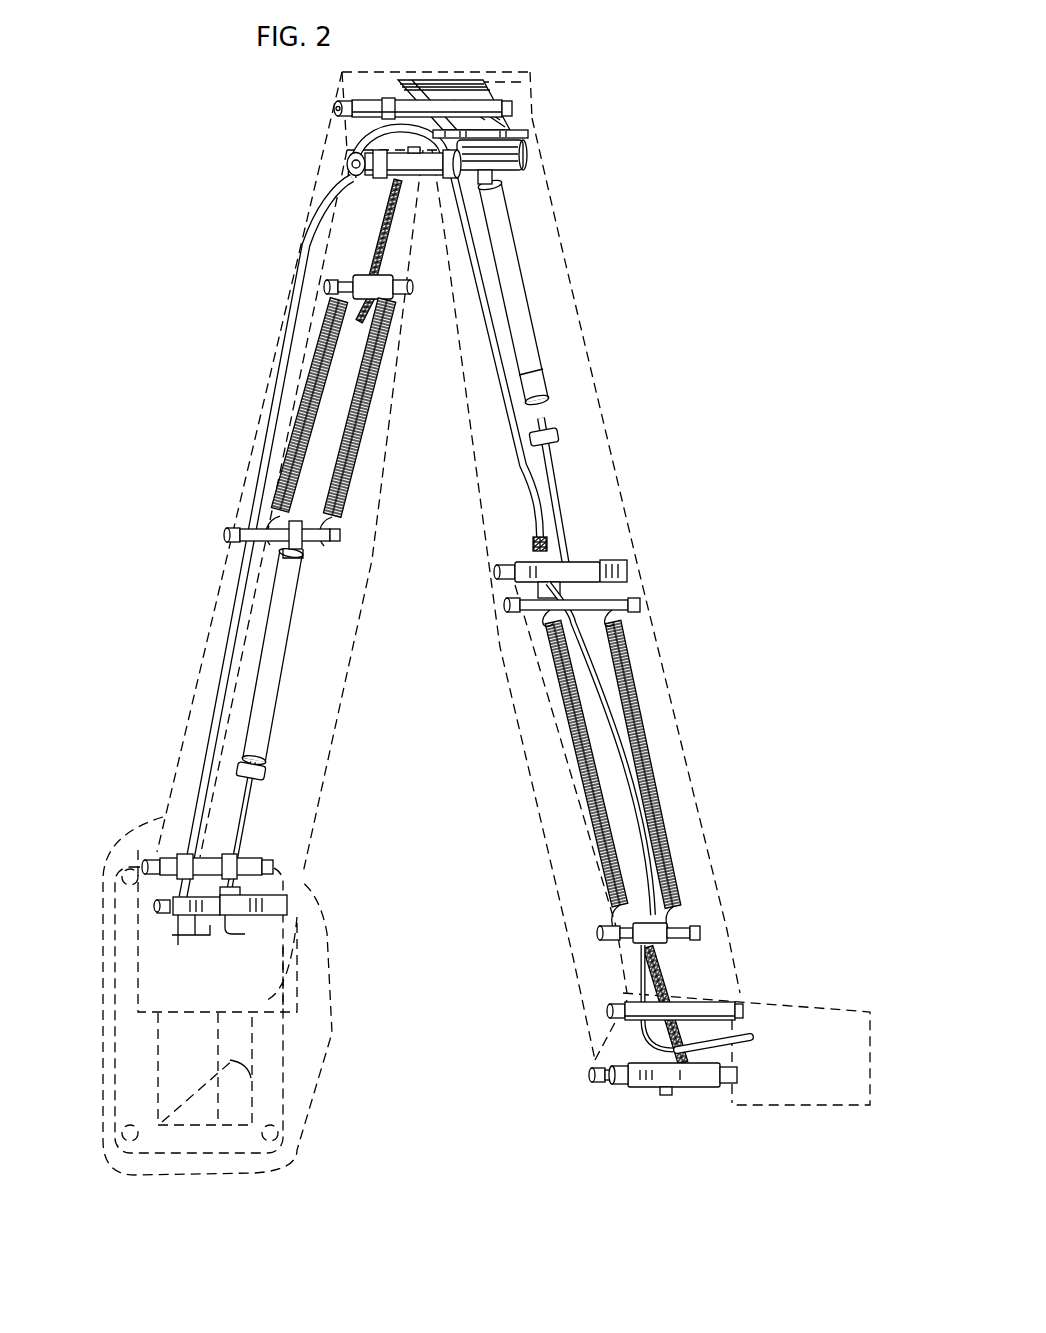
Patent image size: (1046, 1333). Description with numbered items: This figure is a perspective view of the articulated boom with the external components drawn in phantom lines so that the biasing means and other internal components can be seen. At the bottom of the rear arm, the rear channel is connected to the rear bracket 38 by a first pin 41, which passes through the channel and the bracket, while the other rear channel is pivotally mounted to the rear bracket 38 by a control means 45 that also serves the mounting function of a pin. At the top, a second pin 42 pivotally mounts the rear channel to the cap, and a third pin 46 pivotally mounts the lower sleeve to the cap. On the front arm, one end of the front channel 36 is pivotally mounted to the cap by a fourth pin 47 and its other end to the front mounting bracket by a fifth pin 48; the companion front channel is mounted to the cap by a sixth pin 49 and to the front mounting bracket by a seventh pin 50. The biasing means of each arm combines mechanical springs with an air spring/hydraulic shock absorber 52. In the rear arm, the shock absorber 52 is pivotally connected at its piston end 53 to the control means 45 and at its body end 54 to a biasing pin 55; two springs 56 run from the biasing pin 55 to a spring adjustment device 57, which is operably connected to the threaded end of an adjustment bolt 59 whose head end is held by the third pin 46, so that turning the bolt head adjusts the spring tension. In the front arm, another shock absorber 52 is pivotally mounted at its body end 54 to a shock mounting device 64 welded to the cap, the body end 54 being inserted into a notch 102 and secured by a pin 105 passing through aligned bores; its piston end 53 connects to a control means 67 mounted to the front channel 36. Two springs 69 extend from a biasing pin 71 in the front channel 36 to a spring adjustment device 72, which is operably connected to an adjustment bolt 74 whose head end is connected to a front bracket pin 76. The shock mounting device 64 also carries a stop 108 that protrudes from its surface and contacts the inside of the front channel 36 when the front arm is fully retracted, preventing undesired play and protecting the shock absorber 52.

The front channel 36 is at (582, 397).
The rear bracket 38 is at (153, 980).
The first pin 41 is at (157, 858).
The second pin 42 is at (338, 108).
The control means 45 is at (280, 906).
The third pin 46 is at (350, 163).
The fourth pin 47 is at (443, 103).
The fifth pin 48 is at (610, 1010).
The sixth pin 49 is at (393, 179).
The seventh pin 50 is at (595, 1075).
The air spring/hydraulic shock absorber 52 is at (489, 472).
The piston end 53 is at (563, 498).
The body end 54 is at (283, 628).
The biasing pin 55 is at (227, 535).
The springs 56 is at (302, 402).
The spring adjustment device 57 is at (330, 285).
The adjustment bolt 59 is at (387, 230).
The shock mounting device 64 is at (563, 112).
The control means 67 is at (621, 560).
The springs 69 is at (567, 700).
The biasing pin 71 is at (640, 605).
The spring adjustment device 72 is at (713, 935).
The adjustment bolt 74 is at (668, 985).
The front bracket pin 76 is at (642, 1080).
The notch 102 is at (500, 160).
The pin 105 is at (431, 178).
The stop 108 is at (512, 133).